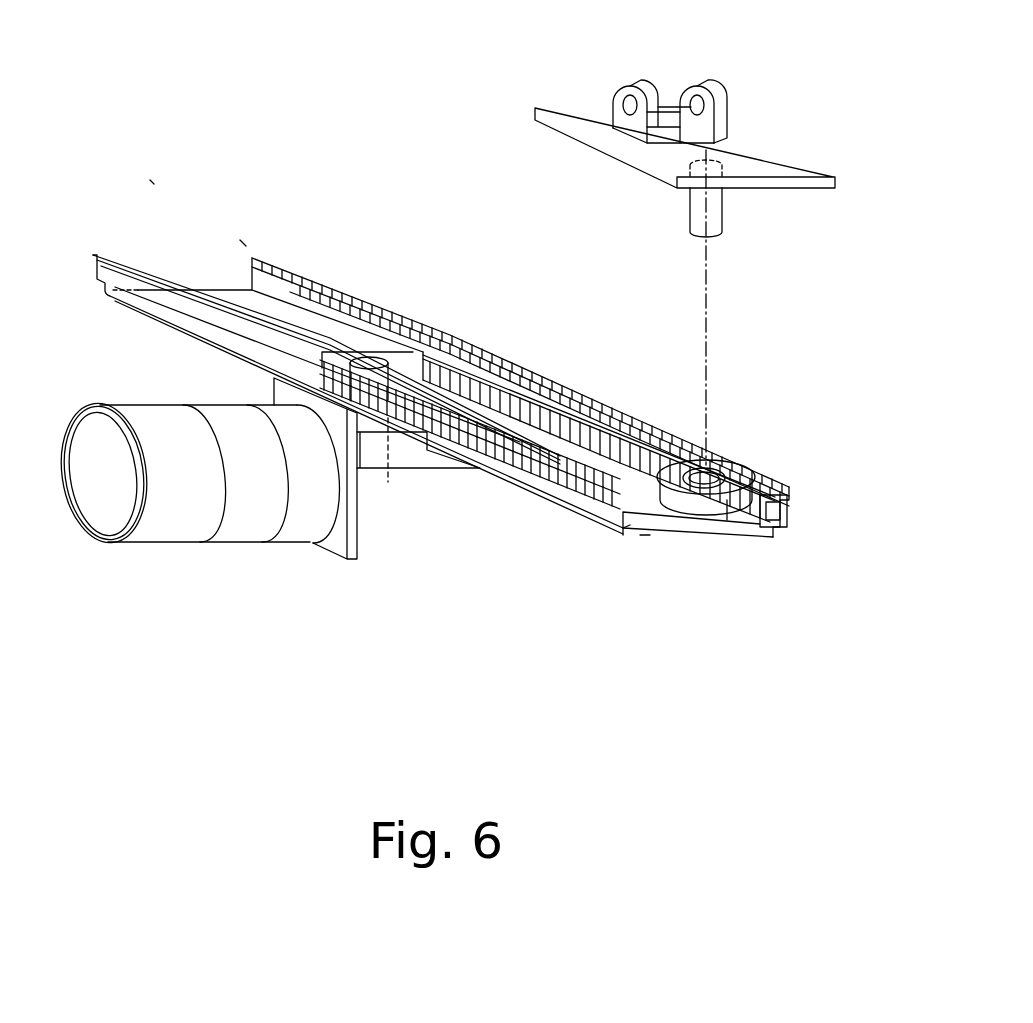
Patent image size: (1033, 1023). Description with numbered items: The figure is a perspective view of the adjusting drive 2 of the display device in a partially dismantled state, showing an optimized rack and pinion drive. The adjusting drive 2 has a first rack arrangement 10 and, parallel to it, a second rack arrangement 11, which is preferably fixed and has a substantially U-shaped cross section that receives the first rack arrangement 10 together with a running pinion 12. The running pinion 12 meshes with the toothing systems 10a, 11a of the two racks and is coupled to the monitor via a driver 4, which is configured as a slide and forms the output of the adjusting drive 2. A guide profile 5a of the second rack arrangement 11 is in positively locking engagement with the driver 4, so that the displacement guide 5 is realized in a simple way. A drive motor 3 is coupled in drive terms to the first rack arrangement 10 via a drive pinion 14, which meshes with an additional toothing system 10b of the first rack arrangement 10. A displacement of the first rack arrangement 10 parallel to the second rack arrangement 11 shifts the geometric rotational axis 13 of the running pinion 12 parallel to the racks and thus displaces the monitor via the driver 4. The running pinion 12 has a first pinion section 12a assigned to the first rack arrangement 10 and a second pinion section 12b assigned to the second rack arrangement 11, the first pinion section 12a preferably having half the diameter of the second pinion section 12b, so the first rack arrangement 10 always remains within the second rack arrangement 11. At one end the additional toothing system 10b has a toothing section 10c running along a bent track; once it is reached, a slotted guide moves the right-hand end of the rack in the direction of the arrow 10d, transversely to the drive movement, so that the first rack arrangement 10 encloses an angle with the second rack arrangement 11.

The adjusting drive 2 is at (733, 592).
The drive motor 3 is at (150, 523).
The driver 4 is at (742, 147).
The displacement guide 5 is at (122, 177).
The guide profile 5a is at (270, 257).
The first rack arrangement 10 is at (478, 482).
The toothing system 10a is at (753, 542).
The additional toothing system 10b is at (563, 480).
The toothing section 10c is at (633, 523).
The arrow 10d is at (693, 547).
The second rack arrangement 11 is at (643, 440).
The toothing system 11a is at (545, 370).
The running pinion 12 is at (760, 500).
The first pinion section 12a is at (733, 520).
The second pinion section 12b is at (770, 511).
The rotational axis 13 is at (712, 258).
The drive pinion 14 is at (386, 484).